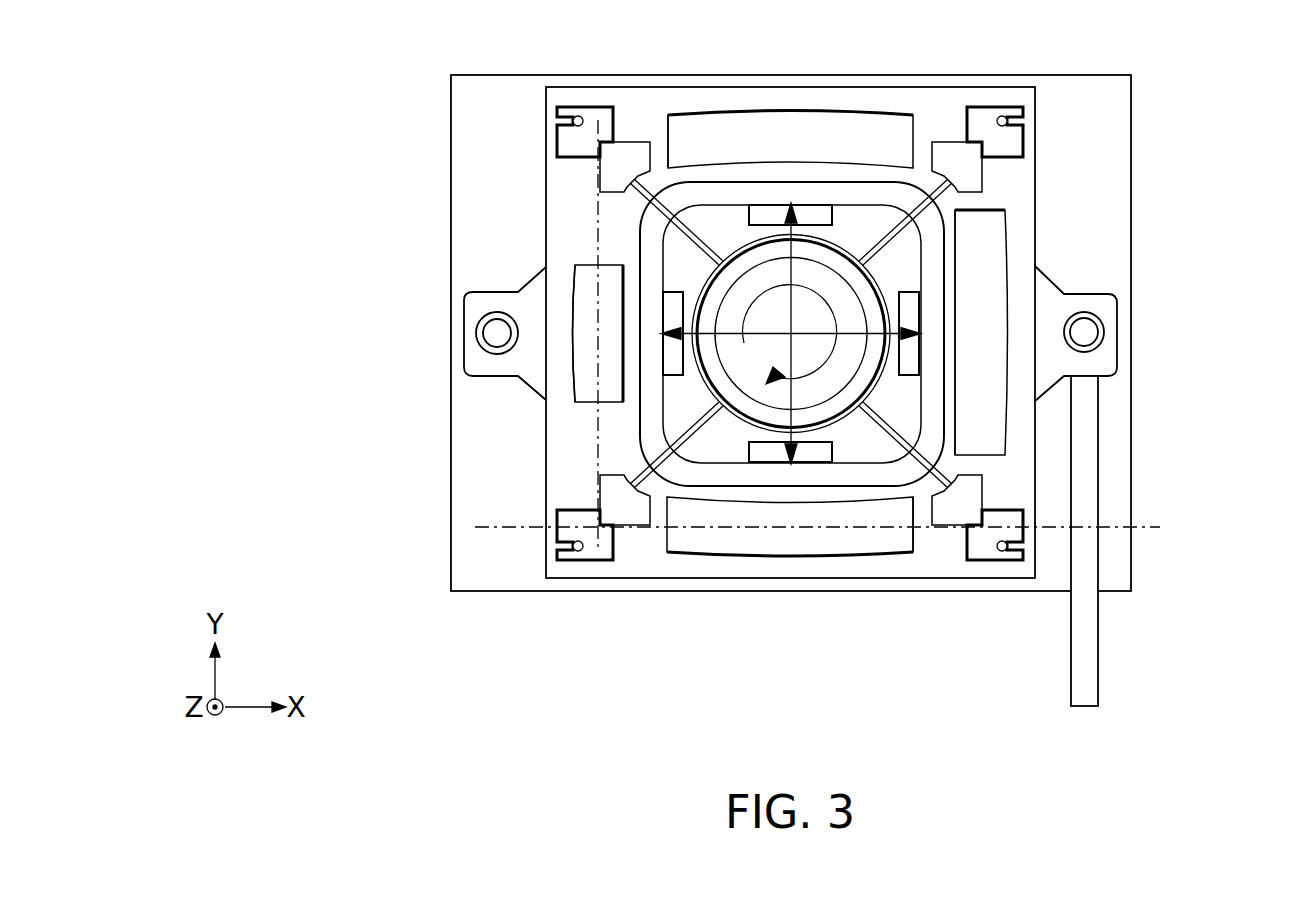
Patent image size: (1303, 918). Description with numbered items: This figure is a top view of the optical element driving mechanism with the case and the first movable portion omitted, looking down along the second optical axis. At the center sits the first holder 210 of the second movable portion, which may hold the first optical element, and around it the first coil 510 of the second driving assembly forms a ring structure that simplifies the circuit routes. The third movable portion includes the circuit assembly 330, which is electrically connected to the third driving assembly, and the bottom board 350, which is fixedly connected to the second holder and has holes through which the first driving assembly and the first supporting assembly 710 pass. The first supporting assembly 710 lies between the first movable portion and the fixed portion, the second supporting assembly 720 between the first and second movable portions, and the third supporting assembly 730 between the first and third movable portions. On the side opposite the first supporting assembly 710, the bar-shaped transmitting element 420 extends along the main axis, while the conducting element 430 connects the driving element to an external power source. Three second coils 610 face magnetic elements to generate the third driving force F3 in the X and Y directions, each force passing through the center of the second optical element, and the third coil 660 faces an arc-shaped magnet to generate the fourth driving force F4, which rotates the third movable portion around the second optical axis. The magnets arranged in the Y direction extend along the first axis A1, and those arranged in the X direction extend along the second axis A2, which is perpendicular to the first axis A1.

The first holder 210 is at (680, 252).
The circuit assembly 330 is at (1023, 178).
The bottom board 350 is at (497, 300).
The first supporting assembly 710 is at (490, 333).
The transmitting element 420 is at (1084, 330).
The conducting element 430 is at (1088, 438).
The first coil 510 is at (657, 438).
The second coil 610 is at (676, 116).
The third coil 660 is at (585, 403).
The second supporting assembly 720 is at (613, 503).
The third supporting assembly 730 is at (578, 116).
The first axis A1 is at (838, 529).
The second axis A2 is at (598, 197).
The third driving force F3 is at (791, 270).
The fourth driving force F4 is at (817, 373).